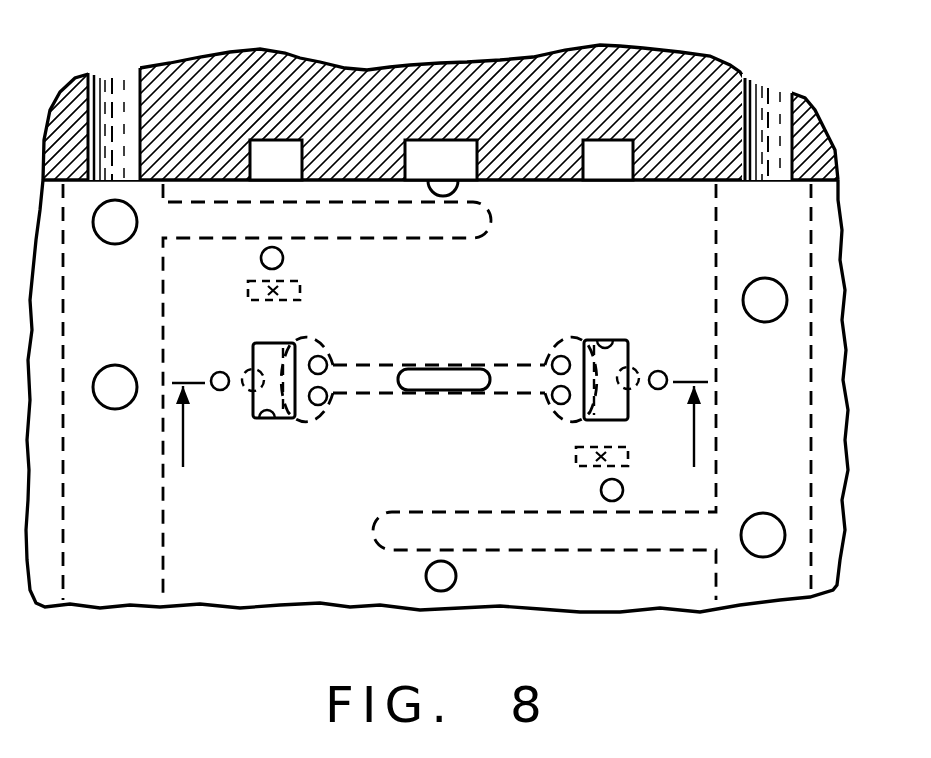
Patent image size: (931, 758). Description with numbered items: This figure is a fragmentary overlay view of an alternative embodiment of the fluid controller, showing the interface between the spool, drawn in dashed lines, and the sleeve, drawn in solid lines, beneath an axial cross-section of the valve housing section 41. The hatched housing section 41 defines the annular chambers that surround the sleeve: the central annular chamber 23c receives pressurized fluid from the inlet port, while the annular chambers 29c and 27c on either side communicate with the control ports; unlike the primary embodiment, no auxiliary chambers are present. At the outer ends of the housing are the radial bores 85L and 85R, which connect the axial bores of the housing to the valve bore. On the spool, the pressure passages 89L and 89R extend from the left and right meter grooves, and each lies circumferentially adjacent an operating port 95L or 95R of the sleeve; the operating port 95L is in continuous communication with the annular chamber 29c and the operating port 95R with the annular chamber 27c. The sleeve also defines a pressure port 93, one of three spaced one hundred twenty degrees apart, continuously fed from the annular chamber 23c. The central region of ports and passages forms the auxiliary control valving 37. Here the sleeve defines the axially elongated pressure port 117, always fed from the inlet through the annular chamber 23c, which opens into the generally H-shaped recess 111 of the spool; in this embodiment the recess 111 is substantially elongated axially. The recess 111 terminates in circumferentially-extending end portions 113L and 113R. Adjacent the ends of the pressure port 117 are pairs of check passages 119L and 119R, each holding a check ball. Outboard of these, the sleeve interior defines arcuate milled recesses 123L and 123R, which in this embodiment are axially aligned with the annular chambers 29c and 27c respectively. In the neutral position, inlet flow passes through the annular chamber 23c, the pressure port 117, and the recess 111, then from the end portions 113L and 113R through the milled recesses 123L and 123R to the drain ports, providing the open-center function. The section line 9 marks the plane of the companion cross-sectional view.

The valve housing section 41 is at (306, 82).
The radial bore 85L is at (117, 97).
The radial bore 85R is at (773, 118).
The annular chamber 29c is at (277, 155).
The annular chamber 23c is at (455, 155).
The annular chamber 27c is at (612, 152).
The pressure passage 89L is at (493, 234).
The pressure passage 89R is at (512, 532).
The operating port 95L is at (283, 259).
The operating port 95R is at (601, 490).
The pressure port 93 is at (426, 577).
The auxiliary control valving 37 is at (428, 330).
The pressure port 117 is at (445, 380).
The recess 111 is at (384, 410).
The end portion 113L is at (313, 345).
The end portion 113R is at (552, 420).
The check passage 119L is at (318, 438).
The check passage 119R is at (563, 362).
The arcuate milled recess 123L is at (270, 419).
The arcuate milled recess 123R is at (606, 342).
The section line 9 is at (440, 419).